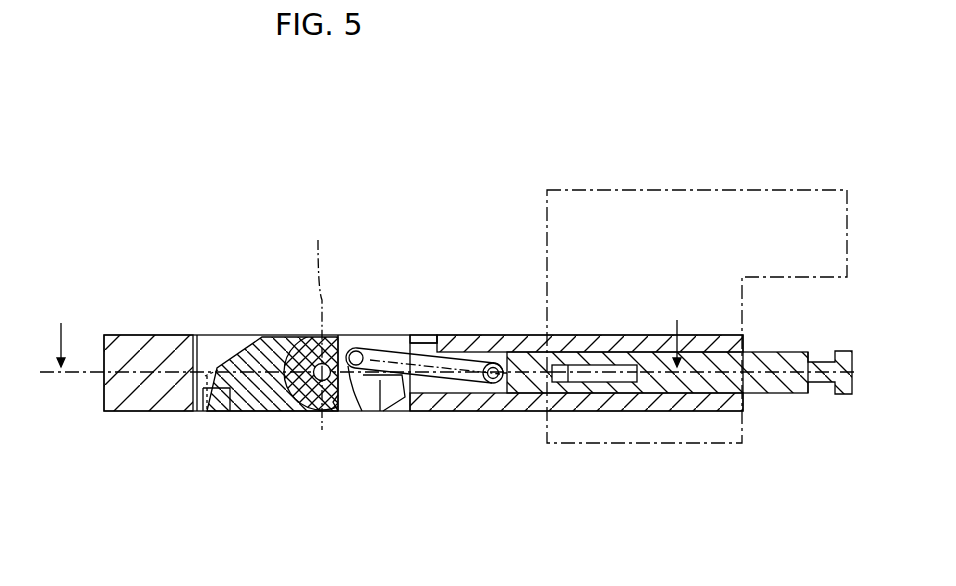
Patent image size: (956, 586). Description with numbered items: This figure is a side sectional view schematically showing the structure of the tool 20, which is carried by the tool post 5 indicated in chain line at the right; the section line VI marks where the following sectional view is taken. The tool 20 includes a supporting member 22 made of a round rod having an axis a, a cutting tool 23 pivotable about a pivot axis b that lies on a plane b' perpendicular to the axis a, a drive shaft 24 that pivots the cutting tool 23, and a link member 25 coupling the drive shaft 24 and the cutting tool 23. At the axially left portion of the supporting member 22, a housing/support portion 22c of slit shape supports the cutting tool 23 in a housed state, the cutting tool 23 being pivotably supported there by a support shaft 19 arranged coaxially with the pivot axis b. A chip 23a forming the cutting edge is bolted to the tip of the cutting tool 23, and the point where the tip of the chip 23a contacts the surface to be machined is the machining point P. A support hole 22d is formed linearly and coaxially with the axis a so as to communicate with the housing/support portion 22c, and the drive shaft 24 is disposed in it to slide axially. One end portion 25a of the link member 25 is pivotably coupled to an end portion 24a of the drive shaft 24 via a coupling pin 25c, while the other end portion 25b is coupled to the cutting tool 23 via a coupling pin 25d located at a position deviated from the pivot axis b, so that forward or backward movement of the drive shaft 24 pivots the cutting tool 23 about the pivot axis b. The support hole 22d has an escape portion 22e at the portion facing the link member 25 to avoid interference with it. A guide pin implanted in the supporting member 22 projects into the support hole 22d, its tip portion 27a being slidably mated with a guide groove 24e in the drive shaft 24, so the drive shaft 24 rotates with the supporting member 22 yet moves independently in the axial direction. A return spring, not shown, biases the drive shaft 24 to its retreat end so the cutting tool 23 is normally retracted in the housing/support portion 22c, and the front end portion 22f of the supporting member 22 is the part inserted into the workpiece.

The tool post 5 is at (672, 189).
The section line VI- VI is at (356, 328).
The tool 20 is at (447, 270).
The supporting member 22 is at (150, 328).
The housing/support portion 22c is at (224, 335).
The support hole 22d is at (673, 411).
The escape portion 22e is at (468, 336).
The front end portion 22f is at (117, 412).
The support shaft 19 is at (292, 336).
The cutting tool 23 is at (335, 330).
The chip (cutting edge) 23a is at (217, 413).
The machining point P is at (207, 413).
The pivot axis b is at (293, 424).
The plane b' is at (322, 292).
The drive shaft 24 is at (719, 350).
The end portion of the drive shaft 24a is at (510, 336).
The guide groove 24e is at (623, 363).
The link member 25 is at (432, 336).
The one end portion of the link member 25a is at (510, 412).
The other end portion of the link member 25b is at (333, 402).
The coupling pin 25c is at (486, 412).
The coupling pin 25d is at (362, 411).
The tip portion of the guide pin 27a is at (580, 363).
The axis a is at (768, 352).